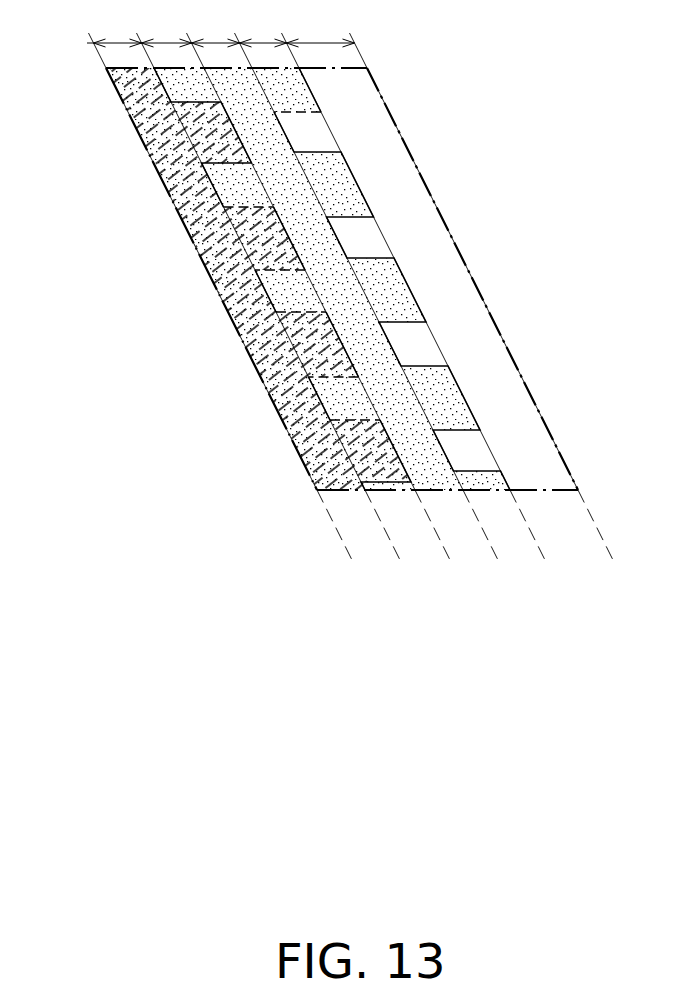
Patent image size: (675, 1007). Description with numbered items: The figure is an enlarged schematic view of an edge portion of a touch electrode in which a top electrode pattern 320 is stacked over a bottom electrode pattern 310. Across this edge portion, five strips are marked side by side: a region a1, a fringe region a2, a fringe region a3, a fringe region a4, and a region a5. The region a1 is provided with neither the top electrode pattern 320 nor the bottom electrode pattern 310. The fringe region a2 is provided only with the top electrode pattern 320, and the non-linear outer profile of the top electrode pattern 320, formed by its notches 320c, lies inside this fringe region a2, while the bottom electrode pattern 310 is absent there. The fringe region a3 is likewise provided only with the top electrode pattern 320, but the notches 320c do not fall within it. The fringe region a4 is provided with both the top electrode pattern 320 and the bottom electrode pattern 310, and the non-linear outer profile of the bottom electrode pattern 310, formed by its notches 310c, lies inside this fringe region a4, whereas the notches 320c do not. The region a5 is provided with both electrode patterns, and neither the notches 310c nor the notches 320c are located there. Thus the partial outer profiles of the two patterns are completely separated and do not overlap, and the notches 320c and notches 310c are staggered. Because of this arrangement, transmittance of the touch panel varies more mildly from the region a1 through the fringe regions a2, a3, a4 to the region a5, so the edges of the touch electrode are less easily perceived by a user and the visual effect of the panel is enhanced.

The bottom electrode pattern 310 is at (133, 122).
The notches of the bottom electrode pattern 310c is at (246, 197).
The top electrode pattern 320 is at (293, 94).
The notches of the top electrode pattern 320c is at (319, 150).
The region a1 is at (321, 26).
The fringe region a2 is at (263, 26).
The fringe region a3 is at (215, 26).
The fringe region a4 is at (167, 26).
The region a5 is at (118, 26).